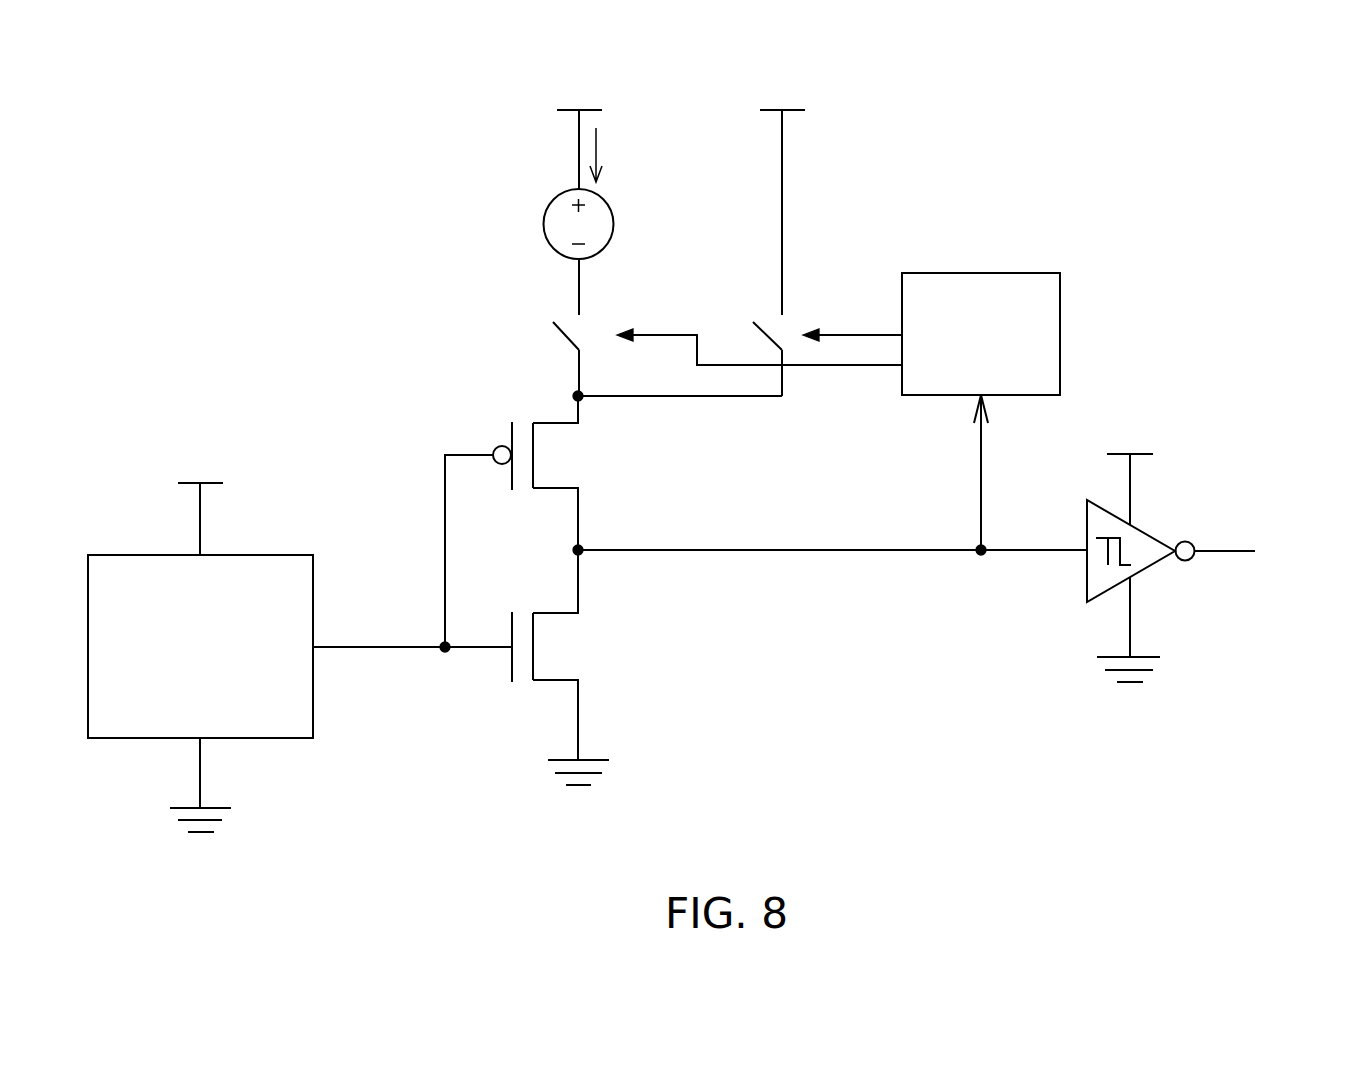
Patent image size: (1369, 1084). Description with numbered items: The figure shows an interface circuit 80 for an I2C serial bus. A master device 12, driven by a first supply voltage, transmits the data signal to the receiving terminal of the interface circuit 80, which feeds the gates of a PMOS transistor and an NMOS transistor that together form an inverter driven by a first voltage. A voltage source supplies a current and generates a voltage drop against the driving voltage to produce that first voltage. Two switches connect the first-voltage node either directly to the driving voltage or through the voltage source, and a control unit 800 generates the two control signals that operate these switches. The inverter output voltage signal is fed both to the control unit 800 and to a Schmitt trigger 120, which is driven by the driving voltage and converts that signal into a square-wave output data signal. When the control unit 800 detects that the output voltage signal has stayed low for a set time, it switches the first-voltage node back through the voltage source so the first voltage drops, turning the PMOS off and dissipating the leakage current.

The master device 12 is at (110, 555).
The interface circuit 80 is at (1142, 222).
The control unit 800 is at (1042, 273).
The Schmitt trigger 120 is at (1143, 532).